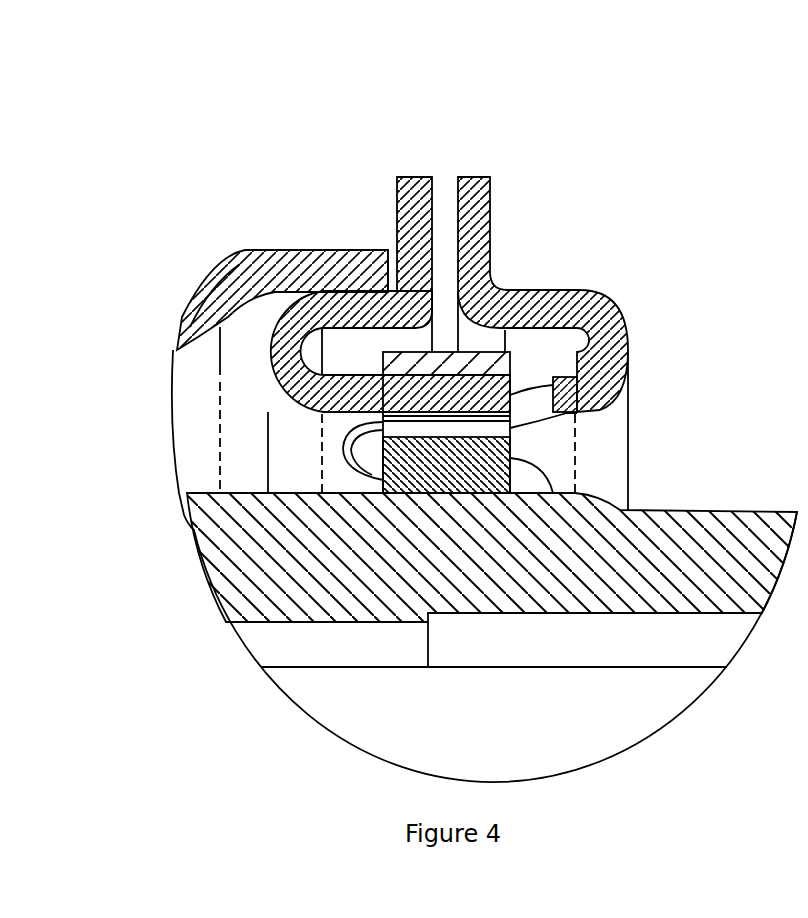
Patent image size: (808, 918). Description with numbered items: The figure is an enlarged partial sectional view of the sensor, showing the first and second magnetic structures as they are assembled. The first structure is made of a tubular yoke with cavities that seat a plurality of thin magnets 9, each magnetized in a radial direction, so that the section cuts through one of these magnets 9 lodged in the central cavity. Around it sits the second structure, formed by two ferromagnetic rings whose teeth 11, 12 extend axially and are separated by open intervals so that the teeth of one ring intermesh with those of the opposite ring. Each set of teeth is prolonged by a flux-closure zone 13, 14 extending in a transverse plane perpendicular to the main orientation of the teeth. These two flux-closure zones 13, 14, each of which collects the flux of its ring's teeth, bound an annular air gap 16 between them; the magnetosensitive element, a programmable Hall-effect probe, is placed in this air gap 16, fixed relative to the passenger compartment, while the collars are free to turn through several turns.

The thin magnets 9 is at (430, 453).
The teeth 11 is at (395, 404).
The teeth 12 is at (617, 388).
The flux-closure zone 13 is at (408, 197).
The flux-closure zone 14 is at (468, 217).
The annular air gap 16 is at (441, 232).